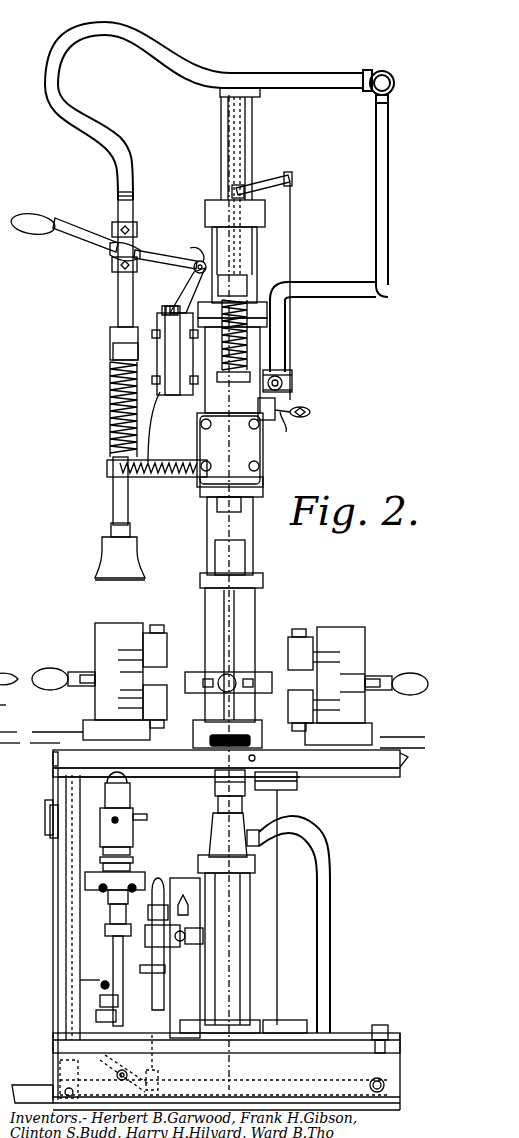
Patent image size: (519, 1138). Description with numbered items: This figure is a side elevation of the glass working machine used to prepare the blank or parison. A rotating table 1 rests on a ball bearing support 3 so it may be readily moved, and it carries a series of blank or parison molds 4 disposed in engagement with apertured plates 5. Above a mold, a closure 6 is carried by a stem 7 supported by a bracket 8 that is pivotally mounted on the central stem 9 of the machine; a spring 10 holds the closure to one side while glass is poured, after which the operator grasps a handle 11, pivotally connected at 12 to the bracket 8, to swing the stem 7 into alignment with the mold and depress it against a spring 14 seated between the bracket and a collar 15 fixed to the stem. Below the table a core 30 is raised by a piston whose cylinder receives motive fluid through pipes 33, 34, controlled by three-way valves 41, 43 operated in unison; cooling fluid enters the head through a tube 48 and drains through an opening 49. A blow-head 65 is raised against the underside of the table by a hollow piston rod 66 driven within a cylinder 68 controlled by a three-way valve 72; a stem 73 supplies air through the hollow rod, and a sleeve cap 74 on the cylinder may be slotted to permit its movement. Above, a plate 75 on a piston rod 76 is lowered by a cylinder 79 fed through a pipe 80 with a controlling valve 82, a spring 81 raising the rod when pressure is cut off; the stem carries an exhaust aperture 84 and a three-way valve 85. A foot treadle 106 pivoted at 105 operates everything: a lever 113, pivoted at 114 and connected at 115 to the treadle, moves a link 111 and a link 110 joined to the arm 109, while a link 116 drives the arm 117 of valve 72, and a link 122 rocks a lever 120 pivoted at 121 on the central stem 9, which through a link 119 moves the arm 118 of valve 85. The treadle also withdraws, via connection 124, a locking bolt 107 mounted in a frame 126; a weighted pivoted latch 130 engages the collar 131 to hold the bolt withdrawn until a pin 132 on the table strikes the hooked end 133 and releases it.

The rotating table 1 is at (330, 770).
The ball bearing support 3 is at (278, 803).
The blank or parison mold 4 is at (103, 632).
The apertured plate 5 is at (41, 654).
The closure 6 is at (112, 556).
The stem 7 is at (118, 287).
The bracket 8 is at (173, 384).
The central stem 9 is at (255, 250).
The spring 10 is at (150, 478).
The handle 11 is at (32, 228).
The pivotal connection 12 is at (188, 272).
The spring 14 is at (110, 371).
The collar 15 is at (110, 347).
The core 30 is at (122, 774).
The pipe 33 is at (105, 1000).
The pipe 34 is at (115, 940).
The three-way valve 41 is at (100, 985).
The three-way valve 43 is at (110, 905).
The tube 48 is at (117, 839).
The opening 49 is at (146, 818).
The blow-head 65 is at (297, 780).
The hollow piston rod 66 is at (216, 805).
The cylinder 68 is at (248, 924).
The three-way valve 72 is at (203, 936).
The stem 73 is at (255, 842).
The sleeve cap 74 is at (213, 822).
The plate 75 is at (255, 580).
The piston rod 76 is at (240, 525).
The cylinder 79 is at (265, 453).
The pipe 80 is at (275, 342).
The spring 81 is at (222, 352).
The controlling valve 82 is at (285, 387).
The exhaust aperture 84 is at (312, 412).
The three-way valve 85 is at (286, 408).
The pivot 105 is at (398, 1058).
The foot treadle 106 is at (32, 1083).
The locking bolt 107 is at (65, 877).
The operating arm 109 is at (152, 888).
The link 110 is at (160, 972).
The link 111 is at (158, 1066).
The lever 113 is at (160, 1088).
The pivot 114 is at (100, 1060).
The connection 115 is at (118, 1078).
The link 116 is at (185, 958).
The arm 117 is at (165, 930).
The arm 118 is at (286, 420).
The link 119 is at (292, 223).
The lever 120 is at (272, 188).
The pivot 121 is at (237, 190).
The link 122 is at (235, 600).
The connection 124 is at (74, 1079).
The frame 126 is at (58, 965).
The pivoted latch 130 is at (48, 825).
The collar 131 is at (56, 850).
The pin 132 is at (53, 757).
The hooked end 133 is at (53, 784).